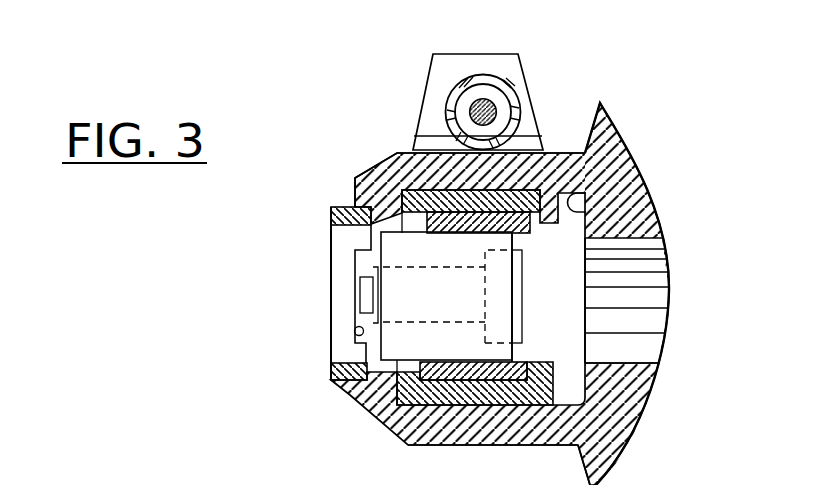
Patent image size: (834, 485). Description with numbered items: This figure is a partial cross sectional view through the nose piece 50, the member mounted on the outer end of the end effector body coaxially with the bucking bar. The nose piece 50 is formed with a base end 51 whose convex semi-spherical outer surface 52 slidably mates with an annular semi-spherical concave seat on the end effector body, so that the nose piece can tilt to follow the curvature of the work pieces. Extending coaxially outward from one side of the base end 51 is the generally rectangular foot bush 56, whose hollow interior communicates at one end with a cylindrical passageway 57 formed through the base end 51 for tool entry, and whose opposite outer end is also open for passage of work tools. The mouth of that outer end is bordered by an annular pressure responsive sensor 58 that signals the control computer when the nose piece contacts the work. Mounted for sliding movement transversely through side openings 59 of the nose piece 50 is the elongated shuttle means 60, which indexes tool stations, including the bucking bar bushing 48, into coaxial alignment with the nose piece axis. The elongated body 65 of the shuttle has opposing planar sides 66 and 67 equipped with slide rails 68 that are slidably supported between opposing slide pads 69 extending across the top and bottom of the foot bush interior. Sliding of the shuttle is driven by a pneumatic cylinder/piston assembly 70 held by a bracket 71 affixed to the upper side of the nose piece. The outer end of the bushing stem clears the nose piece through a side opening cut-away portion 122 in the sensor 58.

The bucking bar bushing 48 is at (348, 293).
The nose piece 50 is at (326, 406).
The base end 51 is at (652, 210).
The convex semi-spherical outer surface 52 is at (676, 257).
The foot bush 56 is at (495, 447).
The cylindrical passageway 57 is at (631, 362).
The annular pressure responsive sensor 58 is at (355, 180).
The side openings 59 is at (587, 212).
The shuttle means 60 is at (393, 282).
The elongated body 65 is at (366, 258).
The planar side 66 is at (404, 222).
The planar side 67 is at (402, 366).
The slide rails 68 is at (530, 235).
The slide pads 69 is at (547, 197).
The pneumatic cylinder/piston assembly 70 is at (521, 78).
The bracket 71 is at (415, 112).
The side opening cut-away portion 122 is at (354, 331).